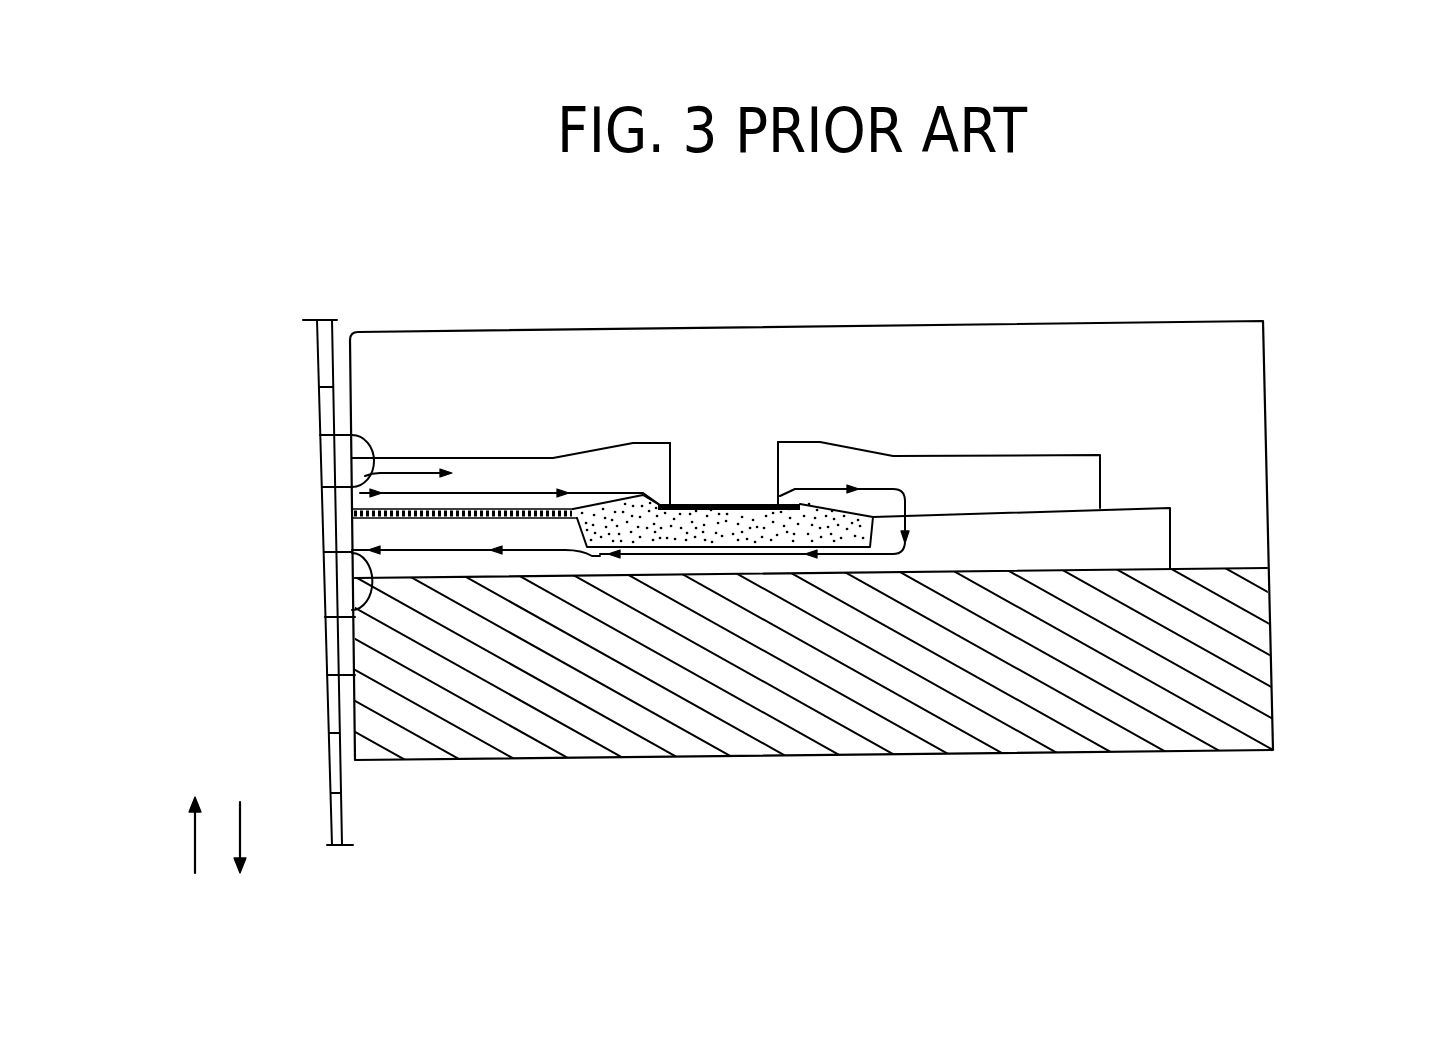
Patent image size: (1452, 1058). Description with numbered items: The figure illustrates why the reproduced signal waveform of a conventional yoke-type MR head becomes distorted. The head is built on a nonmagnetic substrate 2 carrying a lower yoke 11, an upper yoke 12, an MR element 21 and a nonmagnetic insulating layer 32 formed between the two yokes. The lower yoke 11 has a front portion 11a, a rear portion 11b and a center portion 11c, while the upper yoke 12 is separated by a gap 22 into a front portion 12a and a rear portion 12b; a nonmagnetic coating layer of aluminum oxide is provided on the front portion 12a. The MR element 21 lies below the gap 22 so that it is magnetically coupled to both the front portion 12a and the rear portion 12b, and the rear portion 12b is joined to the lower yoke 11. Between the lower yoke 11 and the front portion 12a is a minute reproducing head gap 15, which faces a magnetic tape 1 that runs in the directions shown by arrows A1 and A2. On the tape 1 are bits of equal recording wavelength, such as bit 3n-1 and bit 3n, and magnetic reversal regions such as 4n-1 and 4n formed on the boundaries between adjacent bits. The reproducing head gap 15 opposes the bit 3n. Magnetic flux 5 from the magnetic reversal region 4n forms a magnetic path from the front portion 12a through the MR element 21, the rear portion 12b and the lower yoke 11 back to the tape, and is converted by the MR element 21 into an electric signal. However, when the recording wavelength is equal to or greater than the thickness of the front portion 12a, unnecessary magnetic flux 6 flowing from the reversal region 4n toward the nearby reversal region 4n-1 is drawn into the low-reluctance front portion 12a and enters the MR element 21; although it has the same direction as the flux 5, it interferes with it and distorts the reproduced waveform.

The magnetic tape 1 is at (343, 817).
The nonmagnetic substrate 2 is at (1217, 670).
The magnetic flux 5 is at (540, 493).
The unnecessary magnetic flux 6 is at (402, 458).
The lower yoke 11 is at (889, 646).
The front portion of lower yoke 11a is at (458, 560).
The rear portion of lower yoke 11b is at (1152, 523).
The center portion of lower yoke 11c is at (765, 563).
The upper yoke 12 is at (816, 363).
The front portion of upper yoke 12a is at (508, 473).
The rear portion of upper yoke 12b is at (1083, 463).
The reproducing head gap 15 is at (473, 508).
The MR element 21 is at (695, 503).
The gap 22 is at (733, 460).
The nonmagnetic insulating layer 32 is at (790, 495).
The bit 3n-1 is at (320, 457).
The bit 3n is at (322, 518).
The magnetic reversal region 4n-1 is at (318, 435).
The magnetic reversal region 4n is at (315, 487).
The arrow A1 is at (258, 837).
The arrow A2 is at (171, 835).